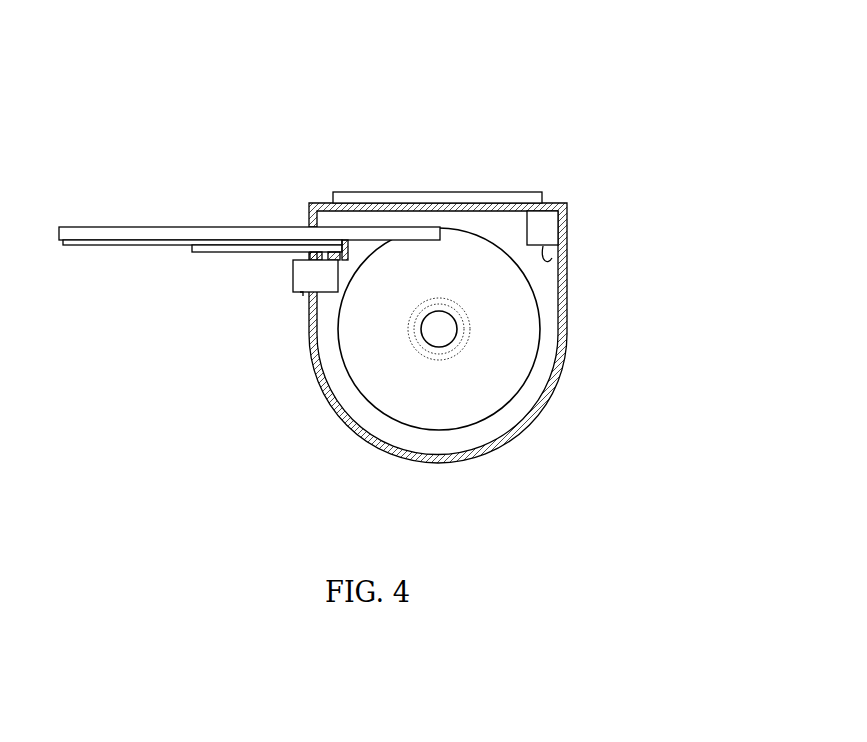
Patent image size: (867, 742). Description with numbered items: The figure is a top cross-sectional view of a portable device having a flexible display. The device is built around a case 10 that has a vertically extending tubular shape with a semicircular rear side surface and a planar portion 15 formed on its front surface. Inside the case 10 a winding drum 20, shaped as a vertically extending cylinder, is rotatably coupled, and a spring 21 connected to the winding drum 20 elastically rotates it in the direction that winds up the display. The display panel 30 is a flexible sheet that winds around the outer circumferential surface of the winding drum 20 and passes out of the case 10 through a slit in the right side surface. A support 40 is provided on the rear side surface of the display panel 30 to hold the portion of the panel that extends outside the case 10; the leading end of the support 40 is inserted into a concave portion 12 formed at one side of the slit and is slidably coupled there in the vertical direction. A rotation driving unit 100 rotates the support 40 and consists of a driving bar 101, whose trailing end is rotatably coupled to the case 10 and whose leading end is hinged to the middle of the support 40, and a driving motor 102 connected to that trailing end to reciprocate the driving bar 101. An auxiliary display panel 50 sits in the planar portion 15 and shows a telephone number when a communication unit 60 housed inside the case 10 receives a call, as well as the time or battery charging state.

The case 10 is at (568, 297).
The concave portion 12 is at (325, 252).
The planar portion 15 is at (512, 203).
The winding drum 20 is at (517, 393).
The spring 21 is at (415, 350).
The display panel 30 is at (360, 203).
The support 40 is at (97, 253).
The auxiliary display panel 50 is at (415, 192).
The communication unit 60 is at (552, 258).
The rotation driving unit 100 is at (245, 286).
The driving bar 101 is at (207, 253).
The driving motor 102 is at (292, 282).